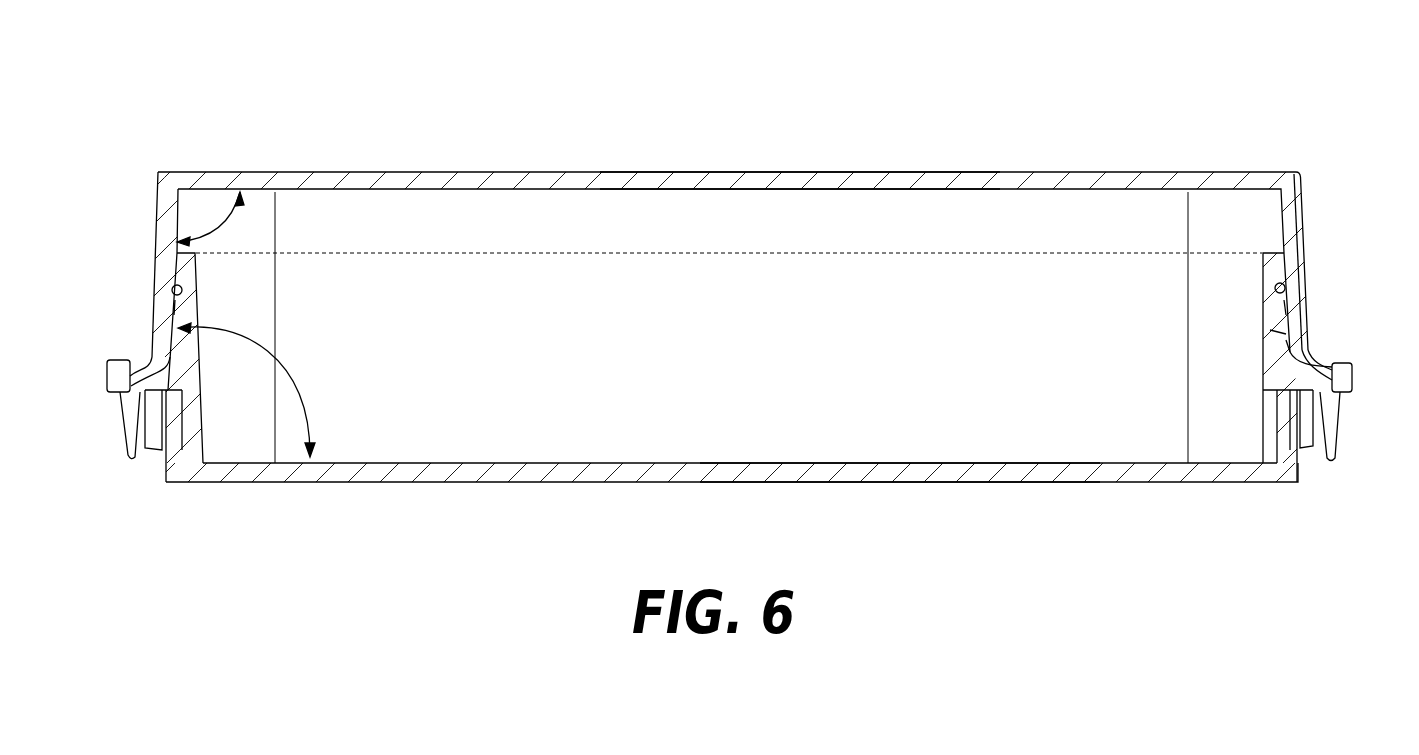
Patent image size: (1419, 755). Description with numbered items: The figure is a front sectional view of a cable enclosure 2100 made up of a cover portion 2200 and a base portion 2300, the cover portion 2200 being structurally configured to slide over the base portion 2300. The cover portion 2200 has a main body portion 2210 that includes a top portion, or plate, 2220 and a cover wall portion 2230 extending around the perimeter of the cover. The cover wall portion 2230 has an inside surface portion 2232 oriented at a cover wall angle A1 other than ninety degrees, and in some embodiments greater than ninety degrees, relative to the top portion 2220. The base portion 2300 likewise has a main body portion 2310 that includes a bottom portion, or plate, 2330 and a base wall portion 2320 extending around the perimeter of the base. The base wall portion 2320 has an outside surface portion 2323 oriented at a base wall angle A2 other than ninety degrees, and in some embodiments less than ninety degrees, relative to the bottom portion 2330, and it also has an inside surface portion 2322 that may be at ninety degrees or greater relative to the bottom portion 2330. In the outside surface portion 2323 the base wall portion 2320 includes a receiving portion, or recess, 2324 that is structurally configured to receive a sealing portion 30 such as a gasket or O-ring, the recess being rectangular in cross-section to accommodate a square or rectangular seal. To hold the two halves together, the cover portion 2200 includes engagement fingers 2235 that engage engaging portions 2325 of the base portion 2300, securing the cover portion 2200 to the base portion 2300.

The enclosure 2100 is at (762, 53).
The cover portion 2200 is at (1135, 189).
The main body portion 2210 is at (957, 178).
The top portion 2220 is at (826, 178).
The cover wall portion 2230 is at (1297, 211).
The inside surface portion 2232 is at (1272, 335).
The engagement fingers 2235 is at (1326, 462).
The base portion 2300 is at (1225, 482).
The main body portion 2310 is at (1055, 482).
The bottom portion 2330 is at (895, 482).
The base wall portion 2320 is at (1272, 392).
The inside surface portion 2322 is at (203, 379).
The outside surface portion 2323 is at (1292, 352).
The receiving portion 2324 is at (1284, 309).
The engaging portions 2325 is at (1352, 378).
The sealing portion 30 is at (173, 290).
The cover wall angle A1 is at (222, 225).
The base wall angle A2 is at (300, 407).